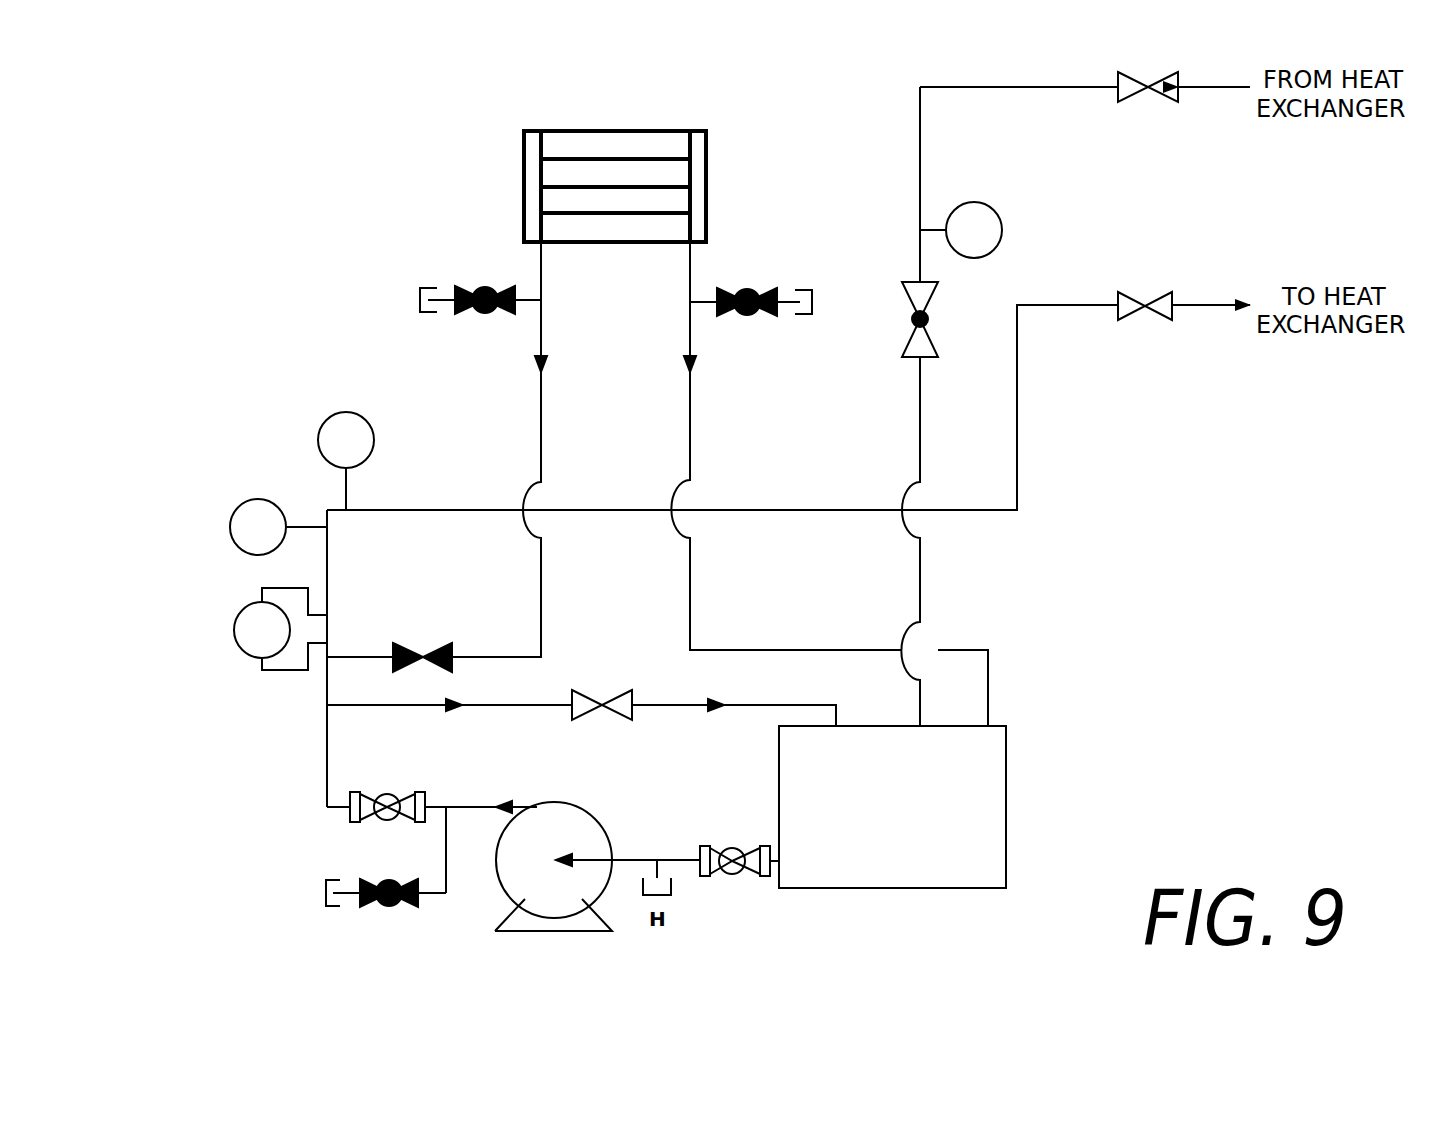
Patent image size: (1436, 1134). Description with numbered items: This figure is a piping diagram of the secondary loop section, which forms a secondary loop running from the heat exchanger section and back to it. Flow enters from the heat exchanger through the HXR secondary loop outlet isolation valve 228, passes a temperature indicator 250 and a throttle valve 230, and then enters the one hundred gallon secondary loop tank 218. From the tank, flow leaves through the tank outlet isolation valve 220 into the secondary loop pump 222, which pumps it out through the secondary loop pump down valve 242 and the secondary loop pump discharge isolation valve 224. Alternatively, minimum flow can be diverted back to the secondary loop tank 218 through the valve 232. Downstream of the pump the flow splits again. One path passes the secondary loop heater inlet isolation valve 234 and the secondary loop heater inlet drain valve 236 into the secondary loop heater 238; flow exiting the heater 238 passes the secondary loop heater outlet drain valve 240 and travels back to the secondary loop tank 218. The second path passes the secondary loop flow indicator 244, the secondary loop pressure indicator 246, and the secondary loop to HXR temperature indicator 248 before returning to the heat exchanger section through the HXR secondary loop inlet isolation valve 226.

The secondary loop tank 218 is at (918, 894).
The tank outlet isolation valve 220 is at (731, 877).
The secondary loop pump 222 is at (546, 939).
The secondary loop pump discharge isolation valve 224 is at (398, 780).
The HXR secondary loop inlet isolation valve 226 is at (1146, 326).
The HXR secondary loop outlet isolation valve 228 is at (1150, 106).
The throttle valve 230 is at (901, 327).
The minimum flow valve 232 is at (605, 689).
The secondary loop heater inlet isolation valve 234 is at (432, 641).
The secondary loop heater inlet drain valve 236 is at (466, 279).
The secondary loop heater 238 is at (615, 252).
The secondary loop heater outlet drain valve 240 is at (758, 276).
The secondary loop pump down valve 242 is at (373, 921).
The secondary loop flow indicator 244 is at (226, 635).
The secondary loop pressure indicator 246 is at (223, 537).
The secondary loop to HXR temperature indicator 248 is at (347, 406).
The temperature indicator 250 is at (1016, 231).